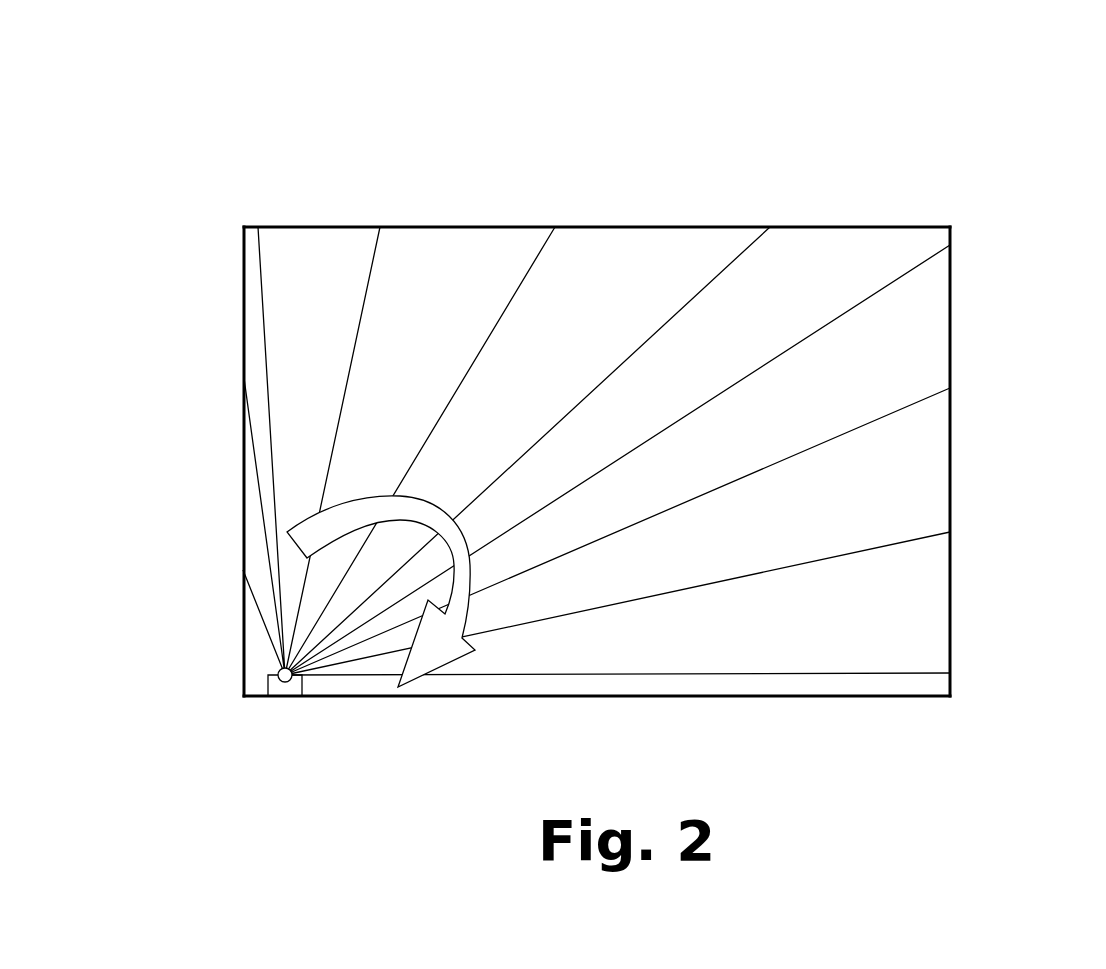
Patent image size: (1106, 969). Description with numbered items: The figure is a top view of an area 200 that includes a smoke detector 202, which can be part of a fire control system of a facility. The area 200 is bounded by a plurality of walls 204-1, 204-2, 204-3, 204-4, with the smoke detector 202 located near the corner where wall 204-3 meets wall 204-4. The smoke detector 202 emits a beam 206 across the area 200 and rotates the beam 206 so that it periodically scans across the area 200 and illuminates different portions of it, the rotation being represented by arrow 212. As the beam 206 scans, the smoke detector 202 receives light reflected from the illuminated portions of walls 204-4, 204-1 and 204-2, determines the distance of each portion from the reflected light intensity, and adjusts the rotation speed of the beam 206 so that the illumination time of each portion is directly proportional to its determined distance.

The area 200 is at (385, 88).
The smoke detector 202 is at (285, 697).
The wall 204-1 is at (678, 227).
The wall 204-2 is at (952, 440).
The wall 204-3 is at (678, 697).
The wall 204-4 is at (243, 437).
The beam 206 is at (262, 277).
The arrow 212 is at (423, 497).